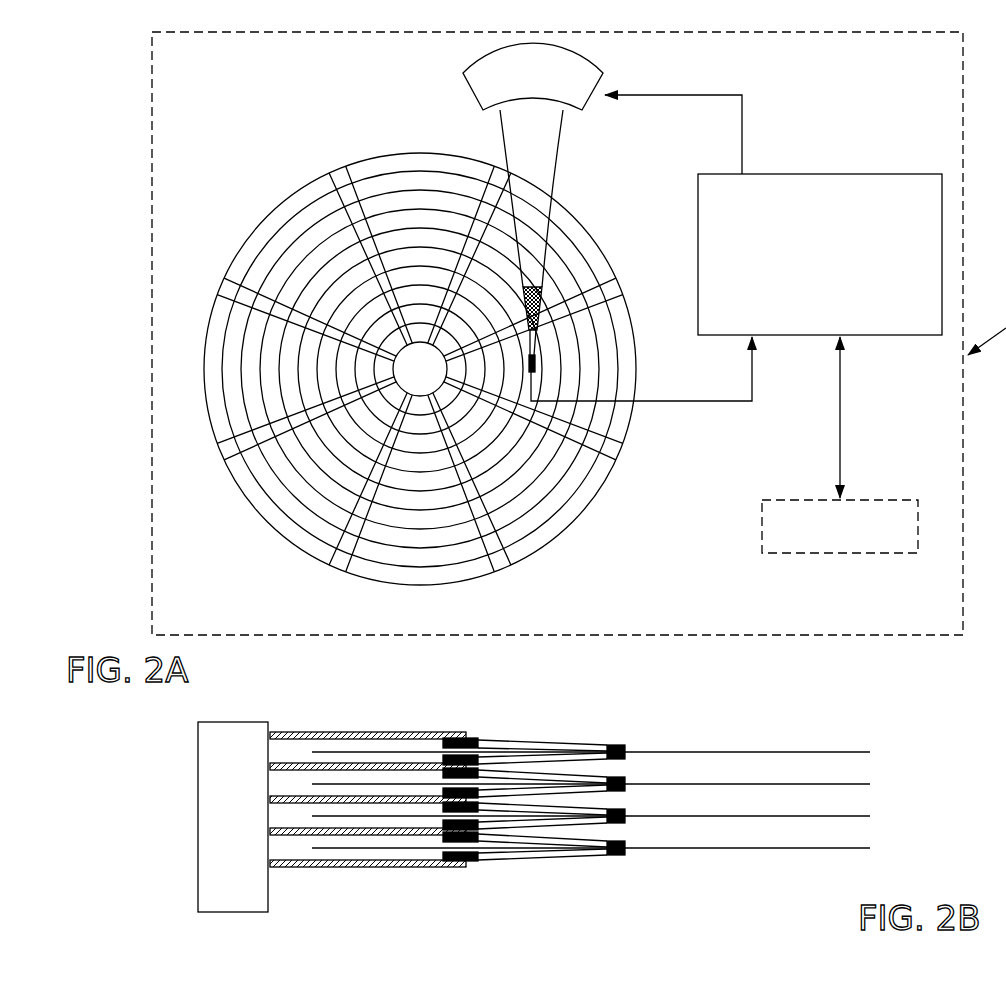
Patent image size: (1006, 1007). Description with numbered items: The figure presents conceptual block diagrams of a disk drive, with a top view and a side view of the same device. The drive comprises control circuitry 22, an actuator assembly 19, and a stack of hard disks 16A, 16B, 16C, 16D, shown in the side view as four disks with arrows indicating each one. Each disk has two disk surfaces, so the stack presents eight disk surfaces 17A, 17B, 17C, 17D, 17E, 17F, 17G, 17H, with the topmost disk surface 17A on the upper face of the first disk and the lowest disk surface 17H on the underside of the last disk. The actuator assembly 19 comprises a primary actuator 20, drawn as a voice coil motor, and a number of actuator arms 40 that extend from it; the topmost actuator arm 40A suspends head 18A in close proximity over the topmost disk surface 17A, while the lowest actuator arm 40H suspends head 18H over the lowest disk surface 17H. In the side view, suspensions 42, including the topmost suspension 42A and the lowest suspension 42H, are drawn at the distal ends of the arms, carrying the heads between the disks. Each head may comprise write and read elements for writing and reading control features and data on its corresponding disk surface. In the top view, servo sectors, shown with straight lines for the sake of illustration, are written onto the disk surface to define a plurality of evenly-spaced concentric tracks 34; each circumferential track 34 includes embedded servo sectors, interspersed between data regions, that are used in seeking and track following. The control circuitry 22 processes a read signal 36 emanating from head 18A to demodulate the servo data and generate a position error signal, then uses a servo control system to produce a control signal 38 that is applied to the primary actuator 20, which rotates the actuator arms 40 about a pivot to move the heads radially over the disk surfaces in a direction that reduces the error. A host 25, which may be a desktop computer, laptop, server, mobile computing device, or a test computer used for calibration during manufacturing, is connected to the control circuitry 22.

In FIG. 2A, the topmost disk surface 17A is at (269, 201).
In FIG. 2B, the topmost disk surface 17A is at (783, 752).
In FIG. 2B, the disk surface 17B is at (767, 756).
In FIG. 2B, the disk surface 17C is at (785, 784).
In FIG. 2B, the disk surface 17D is at (767, 788).
In FIG. 2B, the disk surface 17E is at (772, 816).
In FIG. 2B, the disk surface 17F is at (753, 818).
In FIG. 2B, the disk surface 17G is at (772, 848).
In FIG. 2B, the lowest disk surface 17H is at (787, 850).
In FIG. 2B, the hard disk 16A is at (878, 752).
In FIG. 2B, the hard disk 16B is at (878, 784).
In FIG. 2B, the hard disk 16C is at (878, 816).
In FIG. 2B, the hard disk 16D is at (878, 848).
In FIG. 2A, the head 18A is at (545, 373).
In FIG. 2B, the head 18A is at (629, 745).
In FIG. 2B, the head 18H is at (629, 855).
In FIG. 2A, the actuator assembly 19 is at (578, 135).
In FIG. 2B, the actuator assembly 19 is at (660, 672).
In FIG. 2A, the primary actuator 20 is at (598, 97).
In FIG. 2B, the primary actuator 20 is at (198, 760).
In FIG. 2A, the control circuitry 22 is at (809, 254).
In FIG. 2A, the host 25 is at (880, 537).
In FIG. 2A, the concentric track 34 is at (428, 177).
In FIG. 2A, the read signal 36 is at (732, 401).
In FIG. 2A, the control signal 38 is at (829, 156).
In FIG. 2B, the actuator arms 40 is at (376, 874).
In FIG. 2A, the topmost actuator arm 40A is at (550, 177).
In FIG. 2B, the topmost actuator arm 40A is at (385, 732).
In FIG. 2B, the lowest actuator arm 40H is at (338, 867).
In FIG. 2B, the suspensions 42 is at (520, 870).
In FIG. 2B, the suspension 42A is at (566, 738).
In FIG. 2B, the suspension 42H is at (562, 864).